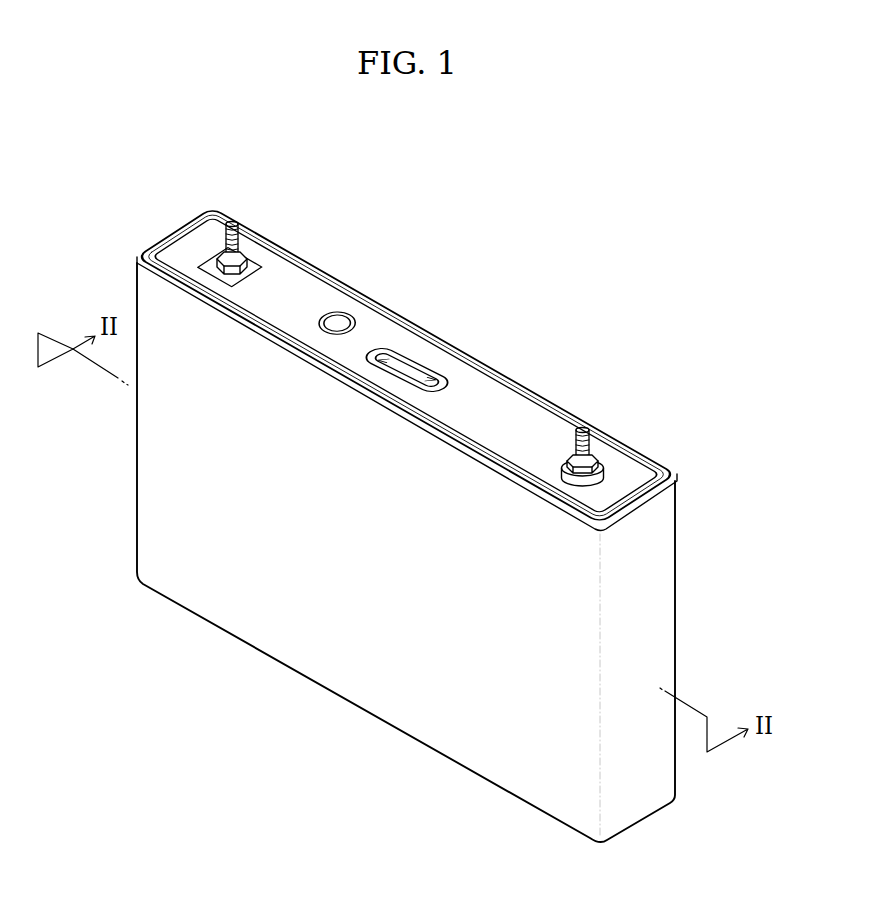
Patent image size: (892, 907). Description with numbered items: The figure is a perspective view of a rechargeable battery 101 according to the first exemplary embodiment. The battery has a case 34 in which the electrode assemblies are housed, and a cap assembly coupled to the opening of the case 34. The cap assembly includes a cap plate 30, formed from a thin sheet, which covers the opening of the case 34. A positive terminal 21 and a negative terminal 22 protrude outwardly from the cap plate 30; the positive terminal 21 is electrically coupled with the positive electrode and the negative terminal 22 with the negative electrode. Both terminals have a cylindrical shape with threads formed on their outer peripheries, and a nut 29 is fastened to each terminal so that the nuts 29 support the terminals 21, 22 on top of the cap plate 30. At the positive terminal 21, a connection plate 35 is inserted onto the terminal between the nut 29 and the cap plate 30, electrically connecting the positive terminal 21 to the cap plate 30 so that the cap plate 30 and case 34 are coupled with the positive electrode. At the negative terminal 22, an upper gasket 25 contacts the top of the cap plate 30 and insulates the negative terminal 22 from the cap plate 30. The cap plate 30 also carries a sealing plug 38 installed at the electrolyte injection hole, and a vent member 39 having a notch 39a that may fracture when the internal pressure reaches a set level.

The rechargeable battery 101 is at (548, 303).
The case 34 is at (343, 675).
The cap plate 30 is at (288, 278).
The sealing plug 38 is at (338, 317).
The vent member 39 is at (400, 355).
The notch 39a is at (418, 368).
The connection plate 35 is at (208, 260).
The positive terminal 21 is at (233, 224).
The negative terminal 22 is at (582, 431).
The nut 29 is at (594, 460).
The upper gasket 25 is at (604, 470).